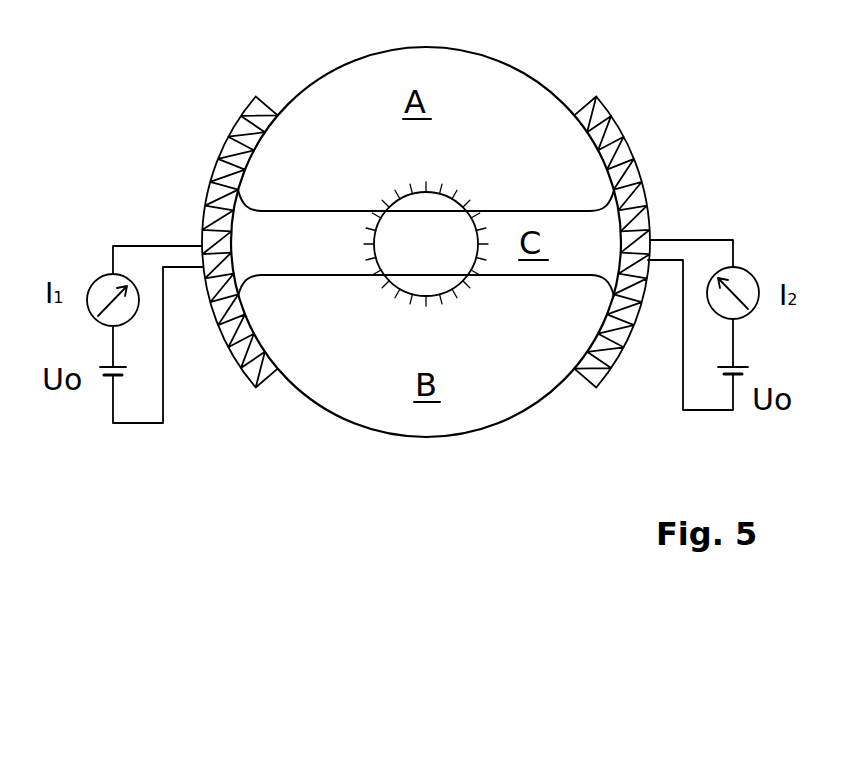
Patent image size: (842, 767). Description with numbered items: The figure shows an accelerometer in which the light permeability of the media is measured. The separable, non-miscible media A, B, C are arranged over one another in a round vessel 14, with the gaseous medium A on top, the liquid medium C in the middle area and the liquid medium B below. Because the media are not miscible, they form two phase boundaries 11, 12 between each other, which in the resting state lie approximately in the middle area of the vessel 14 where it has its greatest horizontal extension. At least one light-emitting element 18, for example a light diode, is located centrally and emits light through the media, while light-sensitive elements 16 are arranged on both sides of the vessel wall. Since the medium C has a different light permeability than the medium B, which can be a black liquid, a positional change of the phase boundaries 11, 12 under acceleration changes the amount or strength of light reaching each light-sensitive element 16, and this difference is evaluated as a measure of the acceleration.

The vessel 14 is at (530, 77).
The light-sensitive element 16 is at (252, 110).
The phase boundary 11 is at (343, 211).
The phase boundary 12 is at (302, 276).
The light-emitting element 18 is at (440, 198).